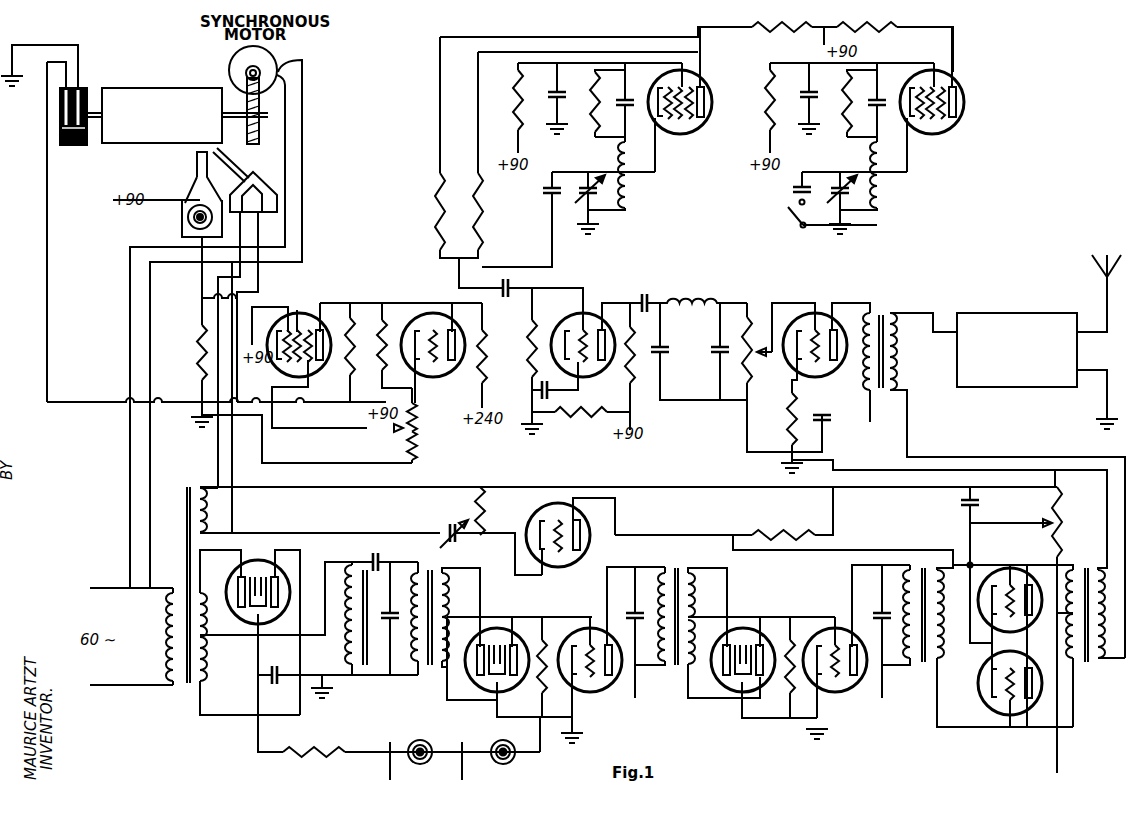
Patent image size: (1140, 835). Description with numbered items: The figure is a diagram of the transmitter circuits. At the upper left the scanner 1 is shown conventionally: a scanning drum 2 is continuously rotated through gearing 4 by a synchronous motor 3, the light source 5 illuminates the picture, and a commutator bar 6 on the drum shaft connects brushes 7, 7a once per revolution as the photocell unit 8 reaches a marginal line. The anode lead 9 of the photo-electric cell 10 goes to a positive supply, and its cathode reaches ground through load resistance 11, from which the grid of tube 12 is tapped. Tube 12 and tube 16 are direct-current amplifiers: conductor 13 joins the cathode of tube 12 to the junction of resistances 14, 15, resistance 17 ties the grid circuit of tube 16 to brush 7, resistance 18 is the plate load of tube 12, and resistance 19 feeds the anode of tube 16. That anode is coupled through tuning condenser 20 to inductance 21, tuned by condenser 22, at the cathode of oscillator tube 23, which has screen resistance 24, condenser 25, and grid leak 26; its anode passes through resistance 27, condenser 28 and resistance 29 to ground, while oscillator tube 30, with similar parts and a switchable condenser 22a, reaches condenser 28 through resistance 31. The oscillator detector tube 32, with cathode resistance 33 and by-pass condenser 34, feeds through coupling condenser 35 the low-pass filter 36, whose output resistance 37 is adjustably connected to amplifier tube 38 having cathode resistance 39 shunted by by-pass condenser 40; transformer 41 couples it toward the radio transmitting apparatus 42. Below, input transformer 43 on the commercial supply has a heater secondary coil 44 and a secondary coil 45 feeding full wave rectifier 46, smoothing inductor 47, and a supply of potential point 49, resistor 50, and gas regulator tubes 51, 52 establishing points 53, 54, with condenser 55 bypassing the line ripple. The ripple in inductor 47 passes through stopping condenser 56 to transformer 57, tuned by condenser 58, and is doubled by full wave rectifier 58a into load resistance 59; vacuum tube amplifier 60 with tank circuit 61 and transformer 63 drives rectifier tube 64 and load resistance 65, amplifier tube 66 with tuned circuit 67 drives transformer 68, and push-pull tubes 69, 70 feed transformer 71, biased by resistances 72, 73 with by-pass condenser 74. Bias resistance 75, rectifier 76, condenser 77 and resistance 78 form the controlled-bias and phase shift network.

The scanner 1 is at (163, 76).
The scanning drum 2 is at (131, 88).
The synchronous motor 3 is at (236, 56).
The gearing 4 is at (246, 73).
The light source 5 is at (256, 182).
The commutator bar 6 is at (60, 134).
The brush 7 is at (64, 84).
The brush 7a is at (80, 76).
The photocell unit 8 is at (196, 193).
The anode lead 9 is at (163, 200).
The photo-electric cell 10 is at (188, 218).
The load resistance 11 is at (198, 347).
The tube 12 is at (301, 313).
The conductor 13 is at (352, 428).
The resistance 14 is at (415, 419).
The resistance 15 is at (416, 456).
The tube 16 is at (445, 367).
The resistance 17 is at (352, 368).
The resistance 18 is at (381, 323).
The resistance 19 is at (485, 340).
The tuning condenser 20 is at (553, 193).
The inductance 21 is at (632, 178).
The tuning condenser 22 is at (601, 209).
The variable capacitor with switch 22a is at (795, 188).
The oscillator tube 23 is at (703, 89).
The resistance 24 is at (516, 100).
The condenser 25 is at (552, 96).
The condenser and grid leak 26 is at (597, 129).
The resistance 27 is at (482, 208).
The condenser 28 is at (511, 288).
The resistance 29 is at (530, 341).
The oscillator tube 30 is at (956, 89).
The resistance 31 is at (438, 208).
The oscillator detector tube 32 is at (579, 321).
The resistance 33 is at (582, 414).
The by-pass condenser 34 is at (540, 391).
The coupling condenser 35 is at (645, 291).
The low-pass filter 36 is at (700, 353).
The output resistance 37 is at (756, 358).
The amplifier tube 38 is at (812, 311).
The resistance 39 is at (788, 425).
The by-pass condenser 40 is at (854, 402).
The transformer 41 is at (880, 313).
The radio transmitting apparatus 42 is at (1018, 313).
The input transformer 43 is at (186, 695).
The secondary coil 44 is at (205, 488).
The secondary coil 45 is at (207, 595).
The full wave rectifier 46 is at (258, 560).
The smoothing inductor 47 is at (345, 648).
The potential point 49 is at (283, 752).
The resistor 50 is at (333, 758).
The gas regulator tube 51 is at (425, 735).
The gas regulator tube 52 is at (505, 736).
The point 53 is at (390, 750).
The point 54 is at (464, 745).
The condenser 55 is at (280, 661).
The stopping condenser 56 is at (368, 559).
The transformer 57 is at (428, 568).
The condenser 58 is at (392, 613).
The full wave rectifier 58a is at (506, 630).
The load resistance 59 is at (545, 680).
The vacuum tube amplifier 60 is at (598, 692).
The tank circuit 61 is at (663, 570).
The transformer 63 is at (688, 570).
The rectifier tube 64 is at (744, 628).
The load resistance 65 is at (785, 688).
The amplifier tube 66 is at (830, 628).
The tuned circuit 67 is at (905, 568).
The transformer 68 is at (925, 568).
The tube 69 is at (1030, 629).
The tube 70 is at (992, 710).
The transformer 71 is at (1085, 568).
The resistance 72 is at (1052, 538).
The resistance 73 is at (1062, 515).
The by-pass condenser 74 is at (985, 503).
The variable controlled bias resistance 75 is at (782, 530).
The rectifier 76 is at (545, 507).
The condenser 77 is at (450, 526).
The resistance 78 is at (486, 518).